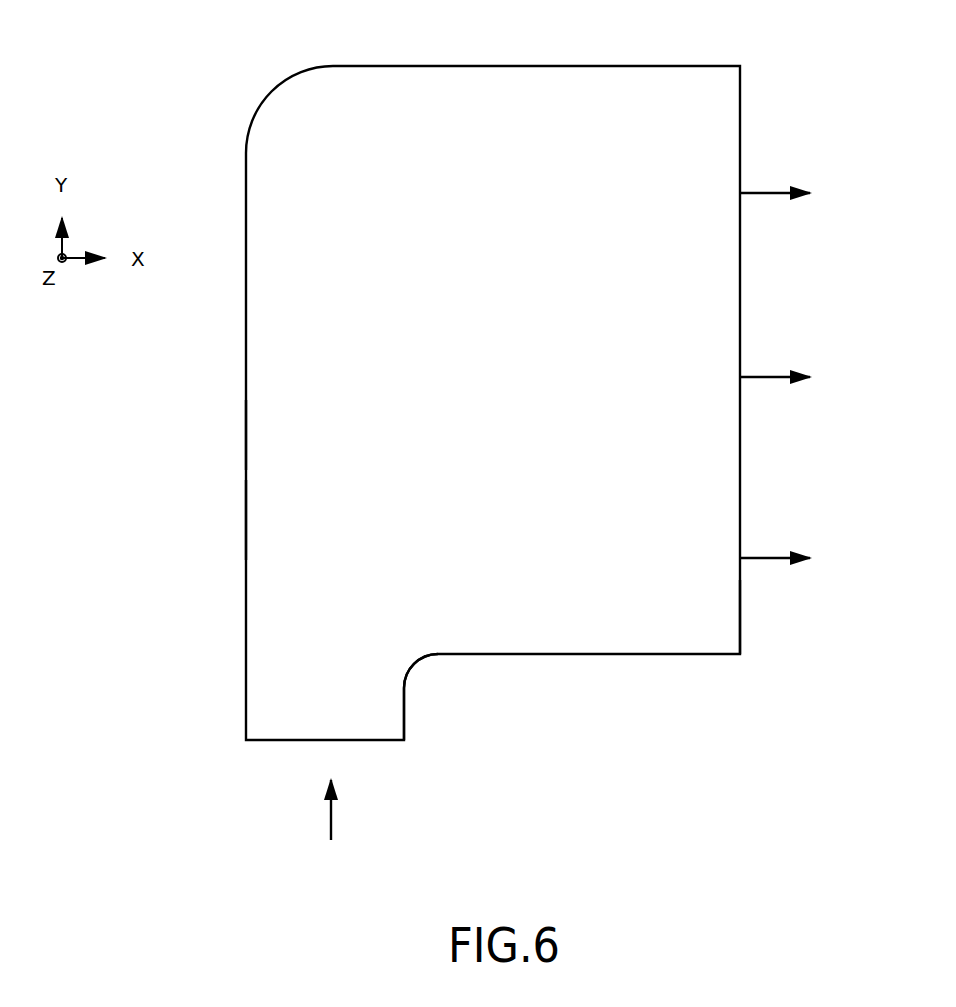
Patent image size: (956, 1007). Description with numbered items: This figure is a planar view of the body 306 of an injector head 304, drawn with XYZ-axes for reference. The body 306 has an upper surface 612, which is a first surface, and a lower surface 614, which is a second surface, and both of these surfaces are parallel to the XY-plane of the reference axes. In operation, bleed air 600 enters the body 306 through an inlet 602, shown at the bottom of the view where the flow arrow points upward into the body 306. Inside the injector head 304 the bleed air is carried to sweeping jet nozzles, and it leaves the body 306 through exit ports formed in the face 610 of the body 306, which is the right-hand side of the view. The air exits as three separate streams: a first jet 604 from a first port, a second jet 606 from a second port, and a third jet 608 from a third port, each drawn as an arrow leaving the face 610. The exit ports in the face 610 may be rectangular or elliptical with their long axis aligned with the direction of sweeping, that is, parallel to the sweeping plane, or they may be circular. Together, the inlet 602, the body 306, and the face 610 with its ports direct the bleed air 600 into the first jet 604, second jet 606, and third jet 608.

The injector head 304 is at (230, 67).
The body 306 is at (515, 376).
The bleed air 600 is at (331, 805).
The inlet 602 is at (405, 700).
The first jet 604 is at (770, 556).
The second jet 606 is at (770, 375).
The third jet 608 is at (770, 191).
The face 610 is at (740, 612).
The upper surface 612 is at (285, 518).
The lower surface 614 is at (218, 436).